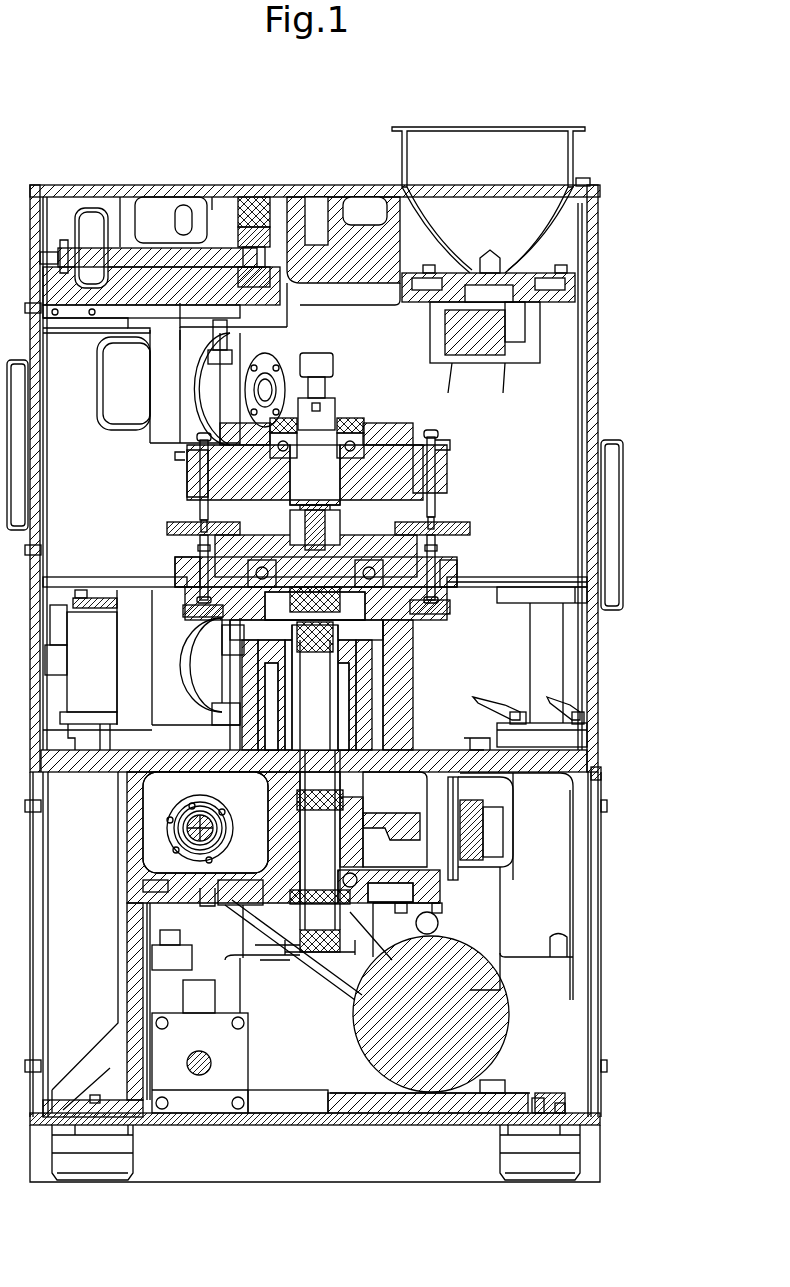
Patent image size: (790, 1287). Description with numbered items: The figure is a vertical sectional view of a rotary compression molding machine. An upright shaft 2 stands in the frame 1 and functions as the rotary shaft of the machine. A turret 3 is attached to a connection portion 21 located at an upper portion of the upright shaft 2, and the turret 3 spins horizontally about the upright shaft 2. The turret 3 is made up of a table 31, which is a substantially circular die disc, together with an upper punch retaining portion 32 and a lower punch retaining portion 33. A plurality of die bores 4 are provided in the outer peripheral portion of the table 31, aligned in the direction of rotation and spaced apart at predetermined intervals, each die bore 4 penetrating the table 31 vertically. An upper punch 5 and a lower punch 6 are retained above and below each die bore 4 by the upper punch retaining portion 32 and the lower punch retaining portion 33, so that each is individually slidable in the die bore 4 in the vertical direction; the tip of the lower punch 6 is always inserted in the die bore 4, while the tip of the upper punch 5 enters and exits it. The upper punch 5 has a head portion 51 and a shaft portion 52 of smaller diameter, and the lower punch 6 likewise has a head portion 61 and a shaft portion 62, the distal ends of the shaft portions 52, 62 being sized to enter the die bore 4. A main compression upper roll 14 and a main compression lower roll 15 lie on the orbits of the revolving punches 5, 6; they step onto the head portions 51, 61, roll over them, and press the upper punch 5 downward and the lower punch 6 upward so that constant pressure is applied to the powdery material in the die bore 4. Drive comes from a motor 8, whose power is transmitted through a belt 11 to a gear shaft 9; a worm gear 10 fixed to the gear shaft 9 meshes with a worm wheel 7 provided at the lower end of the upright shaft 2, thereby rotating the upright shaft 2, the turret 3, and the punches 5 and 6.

The frame 1 is at (603, 666).
The upright shaft 2 is at (345, 857).
The turret 3 is at (471, 466).
The die bore 4 is at (440, 516).
The upper punch 5 is at (200, 506).
The lower punch 6 is at (195, 550).
The worm wheel 7 is at (490, 828).
The motor 8 is at (345, 1020).
The gear shaft 9 is at (175, 828).
The worm gear 10 is at (175, 812).
The belt 11 is at (300, 955).
The main compression upper roll 14 is at (180, 395).
The main compression lower roll 15 is at (175, 660).
The connection portion 21 is at (400, 632).
The table 31 is at (170, 528).
The upper punch retaining portion 32 is at (190, 474).
The lower punch retaining portion 33 is at (180, 569).
The head portion 51 is at (478, 398).
The shaft portion 52 is at (445, 482).
The head portion 61 is at (450, 600).
The shaft portion 62 is at (455, 572).